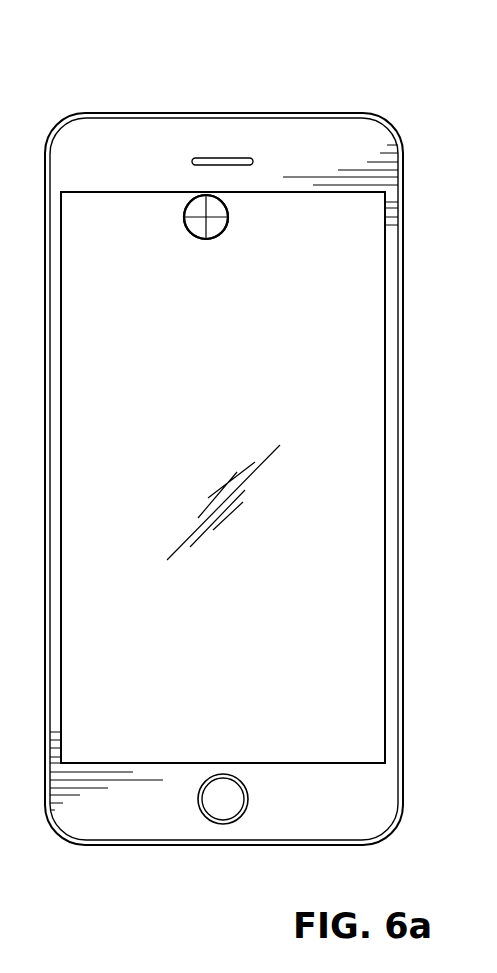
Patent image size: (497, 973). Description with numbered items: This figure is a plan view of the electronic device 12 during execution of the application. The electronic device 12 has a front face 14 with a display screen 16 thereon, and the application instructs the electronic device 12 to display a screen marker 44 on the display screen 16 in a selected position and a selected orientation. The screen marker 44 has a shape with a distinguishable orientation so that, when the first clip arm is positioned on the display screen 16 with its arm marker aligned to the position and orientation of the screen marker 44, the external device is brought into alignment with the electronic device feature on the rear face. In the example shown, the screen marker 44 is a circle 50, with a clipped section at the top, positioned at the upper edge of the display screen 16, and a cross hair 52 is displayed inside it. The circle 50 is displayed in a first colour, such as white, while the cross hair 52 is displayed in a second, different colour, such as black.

The electronic device 12 is at (372, 58).
The front face 14 is at (152, 140).
The display screen 16 is at (293, 285).
The screen marker 44 is at (162, 209).
The circle 50 is at (222, 202).
The cross hair 52 is at (207, 207).